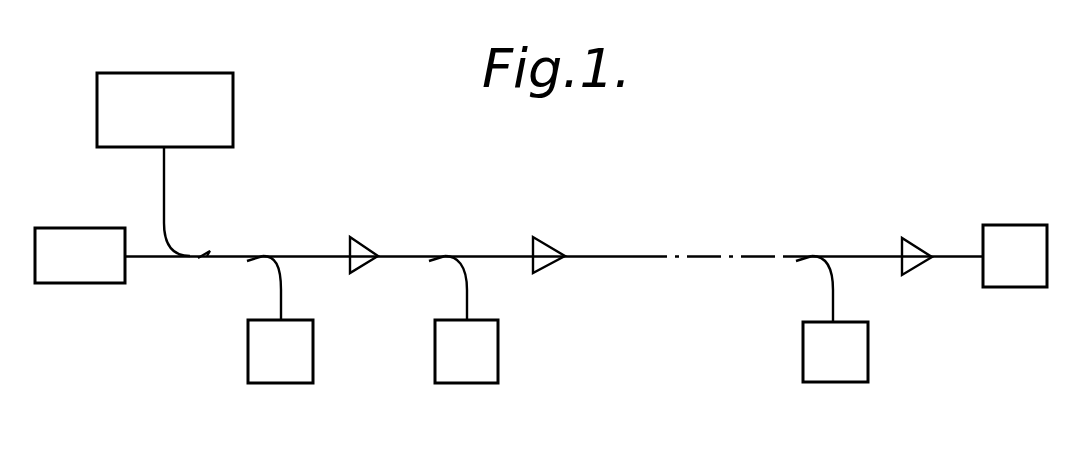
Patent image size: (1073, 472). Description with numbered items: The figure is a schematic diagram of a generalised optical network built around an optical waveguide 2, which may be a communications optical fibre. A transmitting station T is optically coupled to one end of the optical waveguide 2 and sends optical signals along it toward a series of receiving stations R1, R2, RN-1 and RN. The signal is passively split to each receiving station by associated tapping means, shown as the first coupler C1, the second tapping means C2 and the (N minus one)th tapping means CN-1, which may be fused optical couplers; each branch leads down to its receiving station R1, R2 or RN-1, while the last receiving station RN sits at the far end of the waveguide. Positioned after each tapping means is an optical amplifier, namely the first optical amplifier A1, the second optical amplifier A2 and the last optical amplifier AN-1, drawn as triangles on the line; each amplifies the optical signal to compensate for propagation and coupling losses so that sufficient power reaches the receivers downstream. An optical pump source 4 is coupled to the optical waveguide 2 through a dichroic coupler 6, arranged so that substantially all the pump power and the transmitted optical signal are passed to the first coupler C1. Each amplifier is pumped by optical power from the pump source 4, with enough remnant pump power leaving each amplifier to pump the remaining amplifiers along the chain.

The optical waveguide 2 is at (153, 256).
The optical pump source 4 is at (205, 75).
The dichroic coupler 6 is at (194, 254).
The transmitting station T is at (92, 283).
The first coupler C1 is at (264, 255).
The second tapping means C2 is at (446, 255).
The (N-1)th tapping means CN-1 is at (812, 255).
The first optical amplifier A1 is at (360, 243).
The second optical amplifier A2 is at (537, 241).
The (N-1)th optical amplifier AN-1 is at (912, 244).
The first receiving station R1 is at (292, 370).
The second receiving station R2 is at (475, 372).
The (N-1)th receiving station RN-1 is at (840, 372).
The Nth receiving station RN is at (1025, 278).